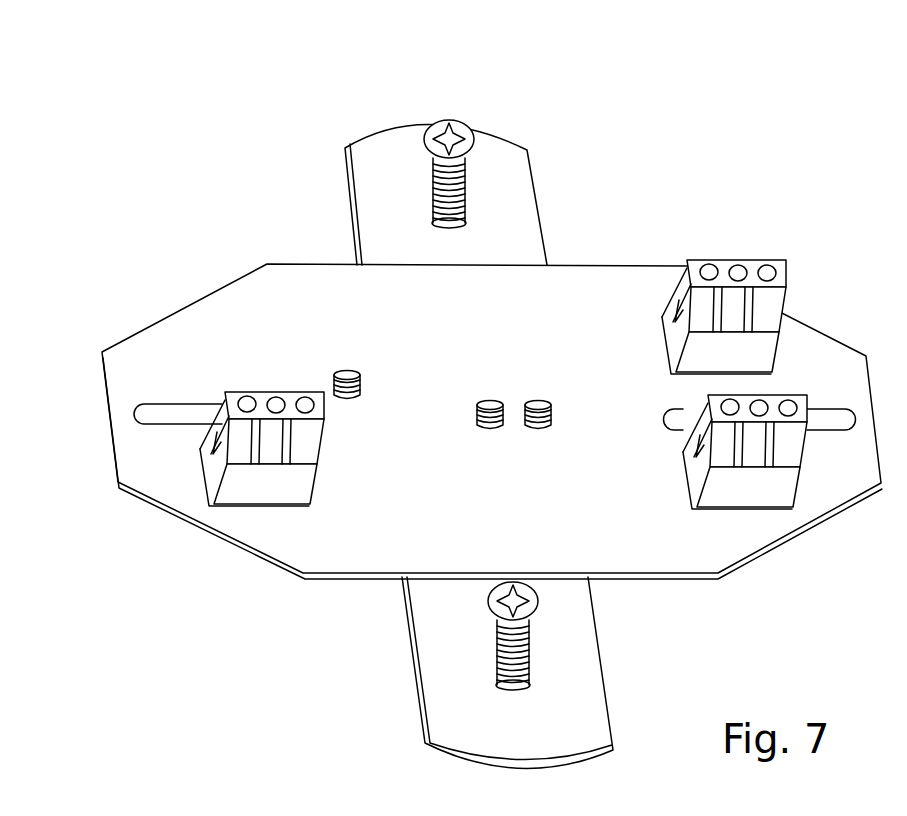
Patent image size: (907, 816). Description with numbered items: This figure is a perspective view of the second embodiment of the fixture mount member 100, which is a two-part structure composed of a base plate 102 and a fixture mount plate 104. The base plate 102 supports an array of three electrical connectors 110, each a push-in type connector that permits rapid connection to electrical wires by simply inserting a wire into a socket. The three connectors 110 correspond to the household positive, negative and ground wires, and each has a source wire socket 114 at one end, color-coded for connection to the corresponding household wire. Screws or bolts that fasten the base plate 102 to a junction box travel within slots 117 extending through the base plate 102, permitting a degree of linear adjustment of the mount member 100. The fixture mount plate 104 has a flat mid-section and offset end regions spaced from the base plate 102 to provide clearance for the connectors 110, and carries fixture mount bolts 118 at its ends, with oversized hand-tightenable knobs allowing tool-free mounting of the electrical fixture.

The fixture mount member 100 is at (587, 170).
The base plate 102 is at (586, 615).
The fixture mount plate 104 is at (747, 571).
The electrical connector 110 is at (695, 260).
The source wire socket 114 is at (670, 292).
The slot 117 is at (195, 407).
The fixture mount bolt 118 is at (466, 187).